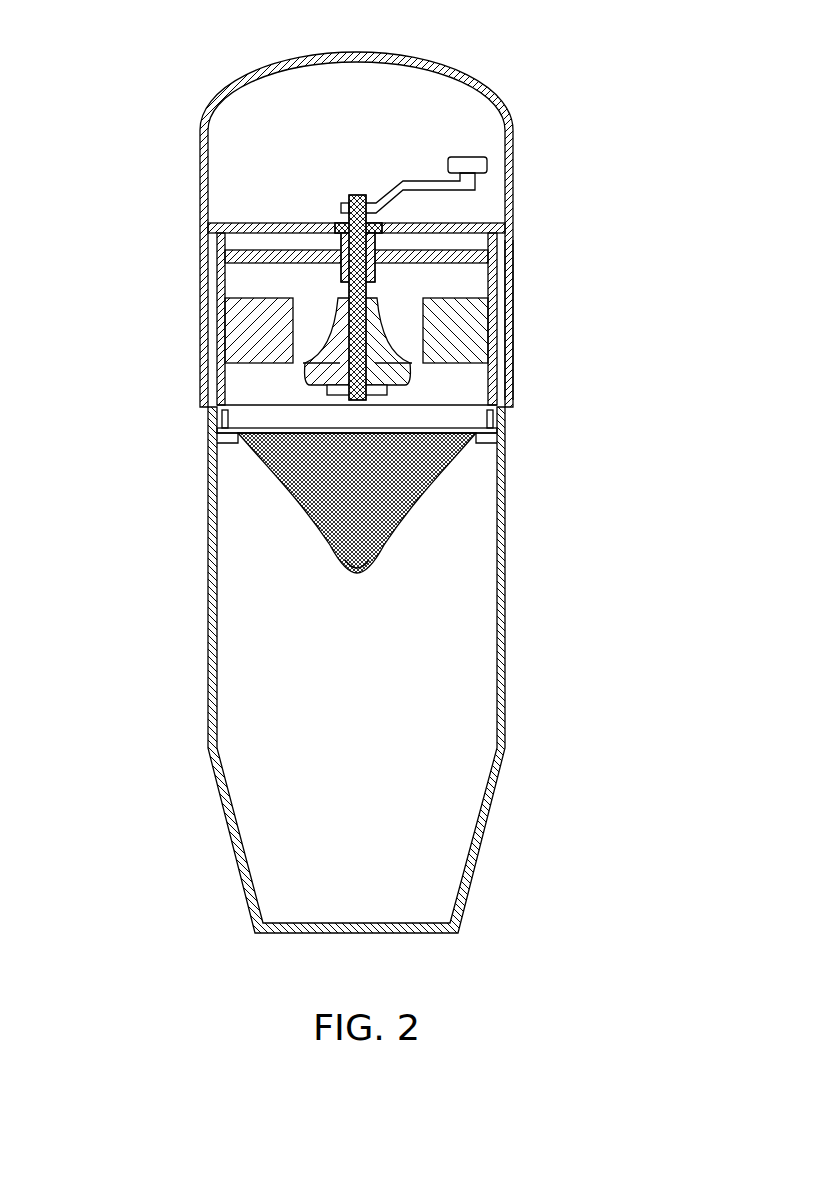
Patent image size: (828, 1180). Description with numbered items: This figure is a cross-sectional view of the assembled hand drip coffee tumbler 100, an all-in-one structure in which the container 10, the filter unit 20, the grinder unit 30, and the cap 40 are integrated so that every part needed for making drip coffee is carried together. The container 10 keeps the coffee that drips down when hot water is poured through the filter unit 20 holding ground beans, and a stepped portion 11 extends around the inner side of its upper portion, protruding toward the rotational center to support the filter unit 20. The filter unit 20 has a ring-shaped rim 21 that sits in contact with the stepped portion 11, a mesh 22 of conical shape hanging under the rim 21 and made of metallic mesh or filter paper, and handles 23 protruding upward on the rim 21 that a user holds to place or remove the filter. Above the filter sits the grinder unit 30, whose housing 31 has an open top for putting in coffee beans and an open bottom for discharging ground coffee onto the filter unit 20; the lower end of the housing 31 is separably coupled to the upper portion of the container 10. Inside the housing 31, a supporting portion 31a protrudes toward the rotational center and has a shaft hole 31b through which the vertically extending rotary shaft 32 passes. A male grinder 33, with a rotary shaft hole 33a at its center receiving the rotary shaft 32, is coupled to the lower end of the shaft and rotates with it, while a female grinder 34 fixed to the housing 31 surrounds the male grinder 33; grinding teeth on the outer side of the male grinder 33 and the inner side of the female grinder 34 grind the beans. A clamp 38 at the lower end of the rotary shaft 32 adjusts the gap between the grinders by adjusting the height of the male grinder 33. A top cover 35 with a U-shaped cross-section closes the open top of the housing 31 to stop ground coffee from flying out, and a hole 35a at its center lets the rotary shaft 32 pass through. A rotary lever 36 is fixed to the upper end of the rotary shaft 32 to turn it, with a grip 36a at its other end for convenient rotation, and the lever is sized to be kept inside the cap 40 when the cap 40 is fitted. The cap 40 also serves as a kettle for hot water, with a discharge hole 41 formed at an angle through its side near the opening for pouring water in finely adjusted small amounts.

The hand drip coffee tumbler 100 is at (603, 44).
The container 10 is at (197, 795).
The stepped portion 11 is at (505, 445).
The filter unit 20 is at (298, 536).
The rim 21 is at (250, 435).
The mesh 22 is at (357, 575).
The handles 23 is at (492, 420).
The grinder unit 30 is at (505, 266).
The housing 31 is at (222, 286).
The supporting portion 31a is at (287, 247).
The shaft hole 31b is at (377, 243).
The rotary shaft 32 is at (347, 372).
The male grinder 33 is at (405, 376).
The rotary shaft hole 33a is at (366, 300).
The female grinder 34 is at (480, 346).
The top cover 35 is at (209, 221).
The hole 35a is at (341, 221).
The rotary lever 36 is at (403, 186).
The grip 36a is at (466, 163).
The clamp 38 is at (387, 392).
The cap 40 is at (513, 149).
The discharge hole 41 is at (513, 306).